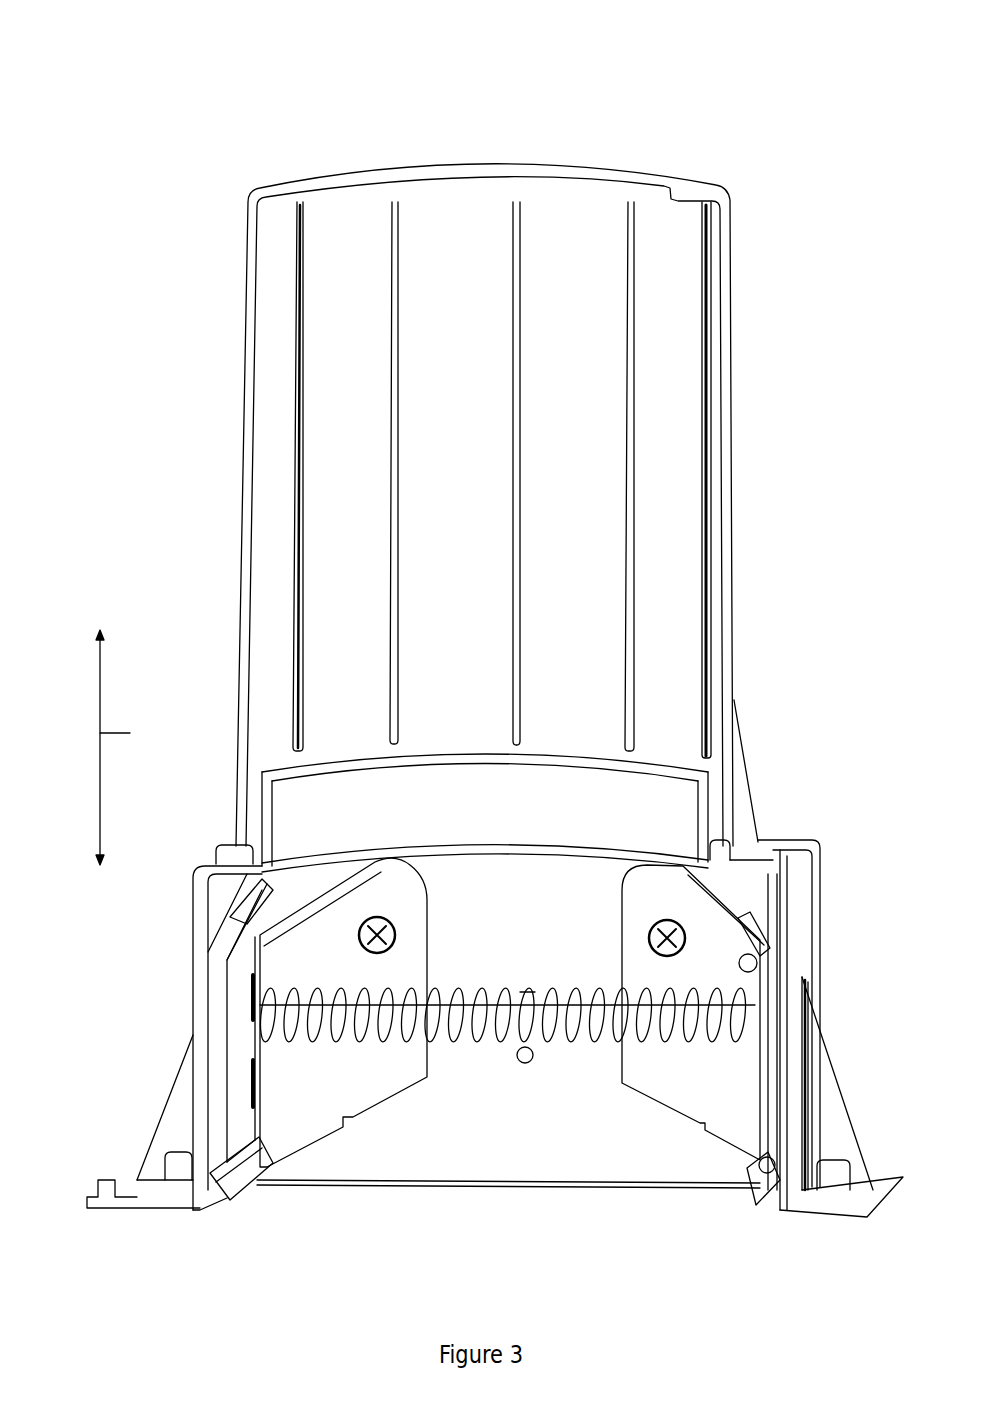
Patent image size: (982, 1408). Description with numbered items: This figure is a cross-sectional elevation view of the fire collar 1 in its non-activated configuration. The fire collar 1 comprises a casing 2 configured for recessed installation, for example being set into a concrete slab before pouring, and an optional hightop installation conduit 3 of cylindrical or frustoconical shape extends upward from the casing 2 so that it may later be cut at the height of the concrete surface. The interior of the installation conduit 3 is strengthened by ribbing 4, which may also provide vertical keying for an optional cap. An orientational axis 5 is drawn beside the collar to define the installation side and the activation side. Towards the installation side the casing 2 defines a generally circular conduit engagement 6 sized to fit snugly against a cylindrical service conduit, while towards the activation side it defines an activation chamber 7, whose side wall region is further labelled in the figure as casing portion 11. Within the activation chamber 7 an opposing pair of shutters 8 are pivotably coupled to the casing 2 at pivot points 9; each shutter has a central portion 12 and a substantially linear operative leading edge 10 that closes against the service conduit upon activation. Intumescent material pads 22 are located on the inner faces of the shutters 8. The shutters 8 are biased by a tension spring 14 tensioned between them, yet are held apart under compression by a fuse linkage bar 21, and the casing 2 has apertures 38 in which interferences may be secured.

The fire collar 1 is at (762, 122).
The casing 2 is at (792, 837).
The installation conduit 3 is at (732, 403).
The ribbing 4 is at (513, 530).
The orientational axis 5 is at (119, 747).
The conduit engagement 6 is at (485, 813).
The activation chamber 7 is at (602, 1220).
The shutters 8 is at (512, 1012).
The pivot points 9 is at (392, 923).
The operative leading edges 10 is at (242, 1197).
The gussets 11 is at (187, 1067).
The central portions 12 is at (203, 1122).
The tension spring 14 is at (488, 983).
The fuse linkage bar 21 is at (528, 1000).
The intumescent material pads 22 is at (247, 968).
The apertures 38 is at (520, 1062).